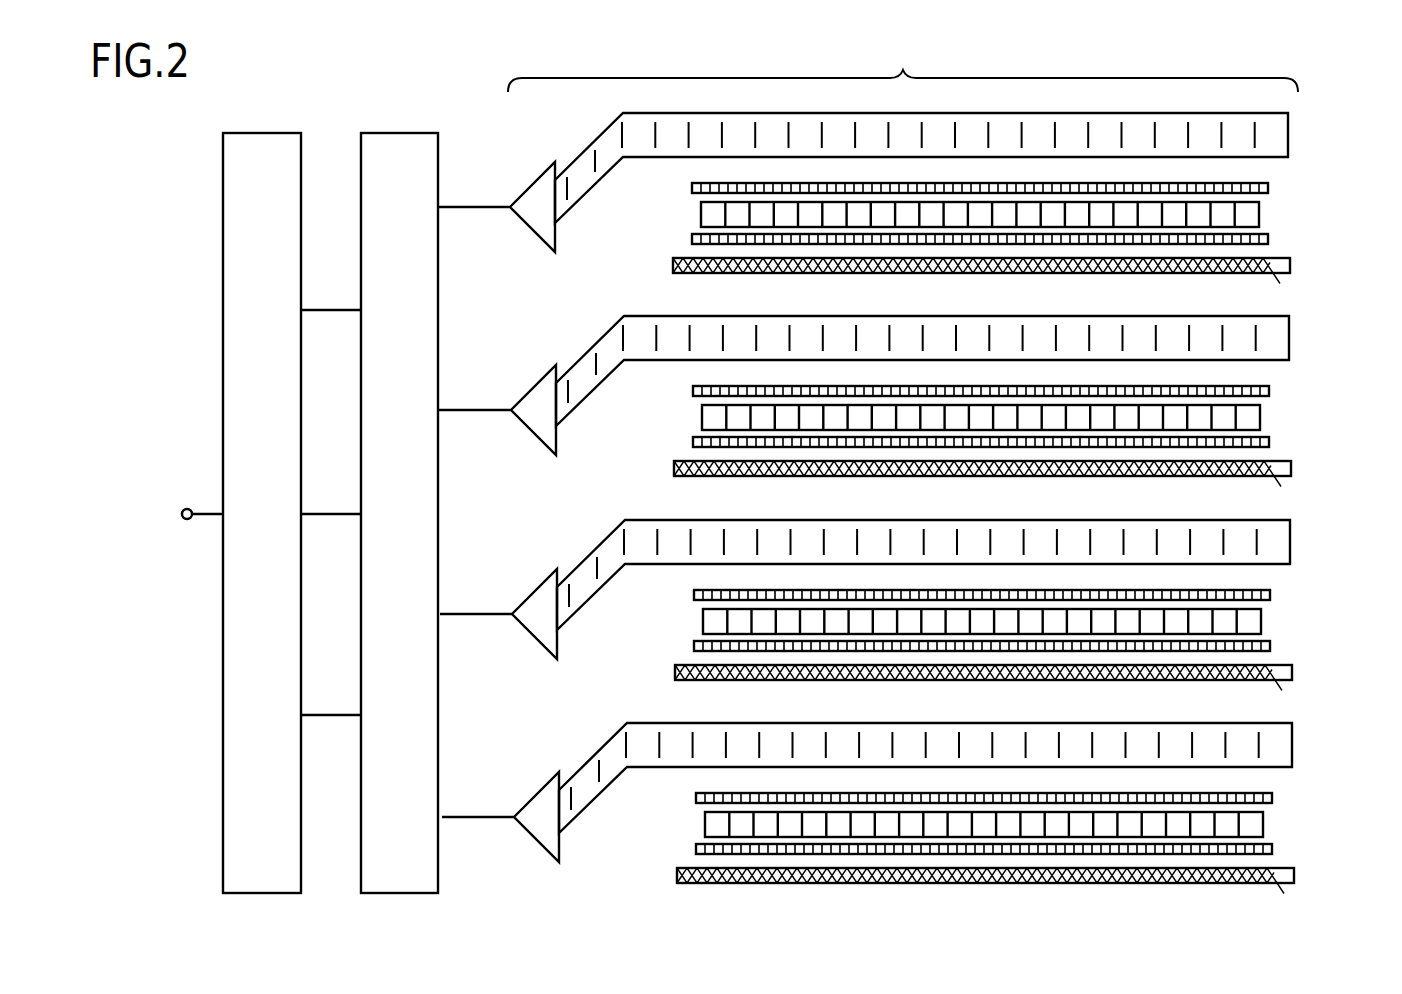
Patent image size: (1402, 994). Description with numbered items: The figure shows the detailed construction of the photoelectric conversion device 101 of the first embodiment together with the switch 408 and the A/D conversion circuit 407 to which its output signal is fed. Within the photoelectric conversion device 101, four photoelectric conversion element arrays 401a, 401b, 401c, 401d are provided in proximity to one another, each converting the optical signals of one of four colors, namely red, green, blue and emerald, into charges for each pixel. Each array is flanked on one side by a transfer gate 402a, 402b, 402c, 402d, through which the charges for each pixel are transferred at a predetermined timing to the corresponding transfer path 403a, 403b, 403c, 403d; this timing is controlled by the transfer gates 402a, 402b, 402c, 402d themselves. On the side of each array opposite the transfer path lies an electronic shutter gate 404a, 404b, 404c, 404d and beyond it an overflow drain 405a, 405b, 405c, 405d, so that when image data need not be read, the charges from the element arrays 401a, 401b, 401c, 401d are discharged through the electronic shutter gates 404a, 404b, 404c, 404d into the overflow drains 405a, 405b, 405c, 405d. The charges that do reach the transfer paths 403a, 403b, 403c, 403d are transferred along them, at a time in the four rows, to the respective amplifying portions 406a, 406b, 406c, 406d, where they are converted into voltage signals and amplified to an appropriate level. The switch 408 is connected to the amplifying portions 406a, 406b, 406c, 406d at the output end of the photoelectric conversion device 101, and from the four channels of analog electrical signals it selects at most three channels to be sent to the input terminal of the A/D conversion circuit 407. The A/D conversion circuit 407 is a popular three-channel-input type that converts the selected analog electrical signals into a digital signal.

The photoelectric conversion device 101 is at (903, 66).
The A/D conversion circuit 407 is at (263, 133).
The switch 408 is at (401, 133).
The amplifying portion 406a is at (528, 189).
The amplifying portion 406b is at (497, 393).
The amplifying portion 406c is at (498, 597).
The amplifying portion 406d is at (500, 800).
The transfer path 403a is at (1289, 128).
The transfer path 403b is at (967, 371).
The transfer path 403c is at (967, 575).
The transfer path 403d is at (970, 778).
The transfer gate 402a is at (1269, 189).
The transfer gate 402b is at (1024, 380).
The transfer gate 402c is at (1024, 584).
The transfer gate 402d is at (1027, 787).
The photoelectric conversion element array 401a is at (1260, 214).
The photoelectric conversion element array 401b is at (1027, 414).
The photoelectric conversion element array 401c is at (1027, 618).
The photoelectric conversion element array 401d is at (1030, 821).
The electronic shutter gate 404a is at (1269, 240).
The electronic shutter gate 404b is at (1025, 443).
The electronic shutter gate 404c is at (1025, 647).
The electronic shutter gate 404d is at (1028, 850).
The overflow drain 405a is at (1291, 266).
The overflow drain 405b is at (1026, 474).
The overflow drain 405c is at (1026, 678).
The overflow drain 405d is at (1029, 881).